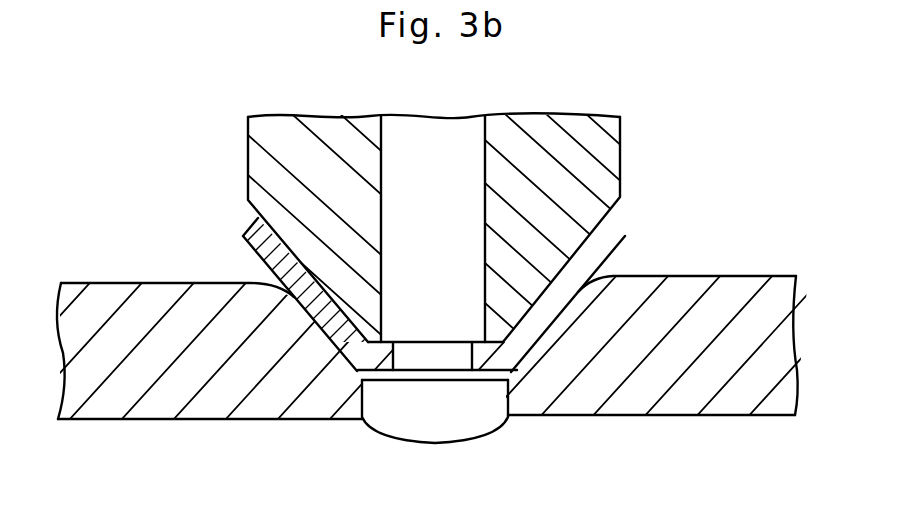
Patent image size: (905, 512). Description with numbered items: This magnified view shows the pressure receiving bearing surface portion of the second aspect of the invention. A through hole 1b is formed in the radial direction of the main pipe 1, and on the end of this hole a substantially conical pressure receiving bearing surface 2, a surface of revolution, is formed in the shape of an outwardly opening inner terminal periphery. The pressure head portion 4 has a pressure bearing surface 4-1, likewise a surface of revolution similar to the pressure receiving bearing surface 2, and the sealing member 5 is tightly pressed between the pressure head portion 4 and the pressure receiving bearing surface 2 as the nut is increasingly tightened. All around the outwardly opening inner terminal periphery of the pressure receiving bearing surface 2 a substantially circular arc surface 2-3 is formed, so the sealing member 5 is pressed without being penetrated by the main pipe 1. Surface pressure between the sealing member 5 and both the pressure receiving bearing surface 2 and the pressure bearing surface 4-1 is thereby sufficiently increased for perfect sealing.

The main pipe 1 is at (663, 407).
The through hole 1b is at (452, 418).
The pressure receiving bearing surface 2 is at (300, 360).
The substantially circular arc surface 2-3 is at (608, 275).
The pressure head portion 4 is at (607, 153).
The pressure bearing surface 4-1 is at (380, 256).
The sealing member 5 is at (262, 250).